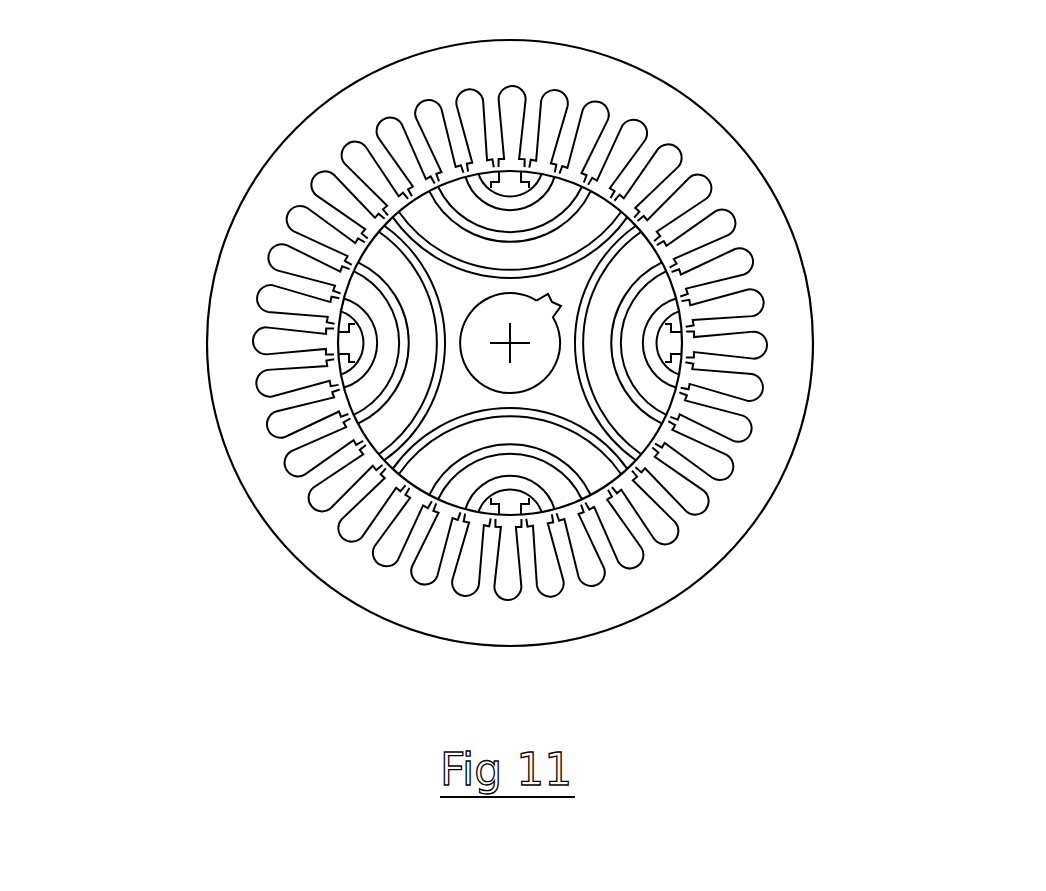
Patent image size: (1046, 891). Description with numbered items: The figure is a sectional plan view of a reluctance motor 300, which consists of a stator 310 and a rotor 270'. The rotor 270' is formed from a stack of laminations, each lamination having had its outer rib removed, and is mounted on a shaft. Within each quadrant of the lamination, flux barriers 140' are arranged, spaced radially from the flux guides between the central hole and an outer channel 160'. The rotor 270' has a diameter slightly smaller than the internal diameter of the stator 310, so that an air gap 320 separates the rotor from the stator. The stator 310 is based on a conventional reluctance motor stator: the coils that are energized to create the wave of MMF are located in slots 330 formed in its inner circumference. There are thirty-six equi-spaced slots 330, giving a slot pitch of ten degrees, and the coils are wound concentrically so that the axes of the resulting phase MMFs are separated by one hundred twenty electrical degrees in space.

The motor 300 is at (191, 484).
The stator 310 is at (664, 588).
The air gap 320 is at (425, 516).
The slots 330 is at (720, 465).
The rotor 270' is at (765, 180).
The outer channel 160' is at (643, 343).
The flux barriers 140' is at (643, 343).